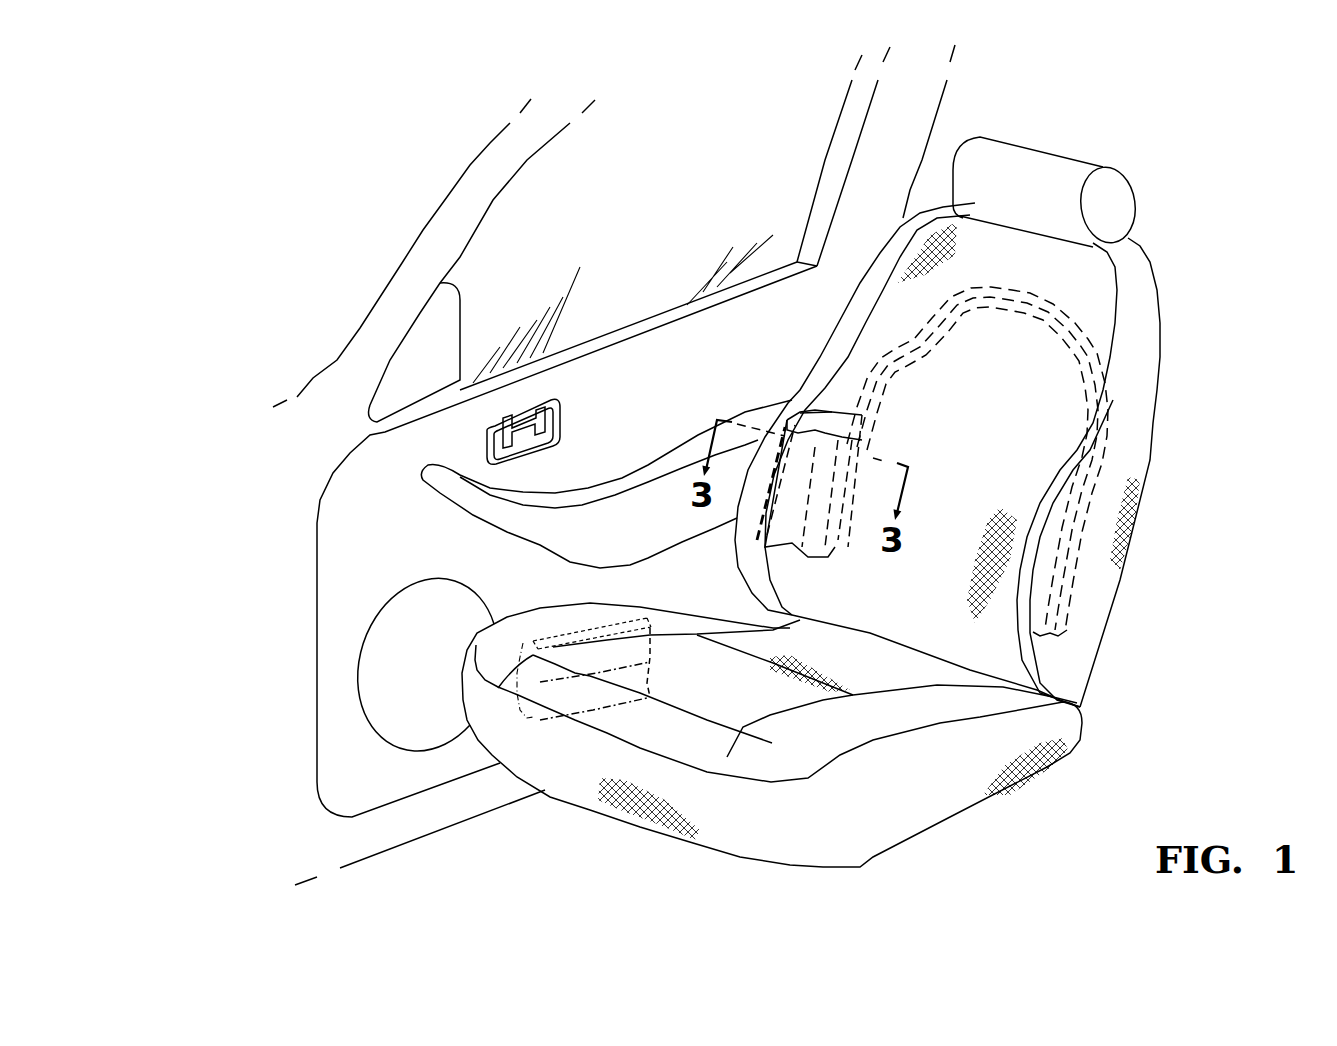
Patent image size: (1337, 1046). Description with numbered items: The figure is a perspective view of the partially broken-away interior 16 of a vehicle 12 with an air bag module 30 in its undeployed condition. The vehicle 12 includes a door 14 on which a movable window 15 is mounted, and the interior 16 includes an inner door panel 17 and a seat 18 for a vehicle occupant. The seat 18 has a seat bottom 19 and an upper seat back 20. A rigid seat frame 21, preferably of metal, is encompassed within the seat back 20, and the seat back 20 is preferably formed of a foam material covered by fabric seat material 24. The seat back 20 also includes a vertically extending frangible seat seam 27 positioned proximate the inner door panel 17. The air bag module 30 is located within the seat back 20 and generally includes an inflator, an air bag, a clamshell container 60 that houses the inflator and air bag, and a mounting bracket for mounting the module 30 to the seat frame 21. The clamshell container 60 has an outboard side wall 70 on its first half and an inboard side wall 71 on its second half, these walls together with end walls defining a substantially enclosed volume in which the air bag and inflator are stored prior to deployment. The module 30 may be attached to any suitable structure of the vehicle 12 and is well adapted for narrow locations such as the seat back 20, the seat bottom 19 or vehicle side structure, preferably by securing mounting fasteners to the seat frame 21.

The vehicle 12 is at (353, 265).
The door 14 is at (338, 548).
The movable window 15 is at (507, 233).
The interior 16 is at (1062, 127).
The inner door panel 17 is at (330, 635).
The seat 18 is at (1110, 593).
The seat bottom 19 is at (927, 795).
The seat back 20 is at (1150, 283).
The seat frame 21 is at (1103, 445).
The fabric seat material 24 is at (1103, 297).
The frangible seat seam 27 is at (873, 303).
The air bag module 30 is at (817, 405).
The clamshell container 60 is at (785, 548).
The outboard side wall 70 is at (790, 418).
The inboard side wall 71 is at (843, 447).